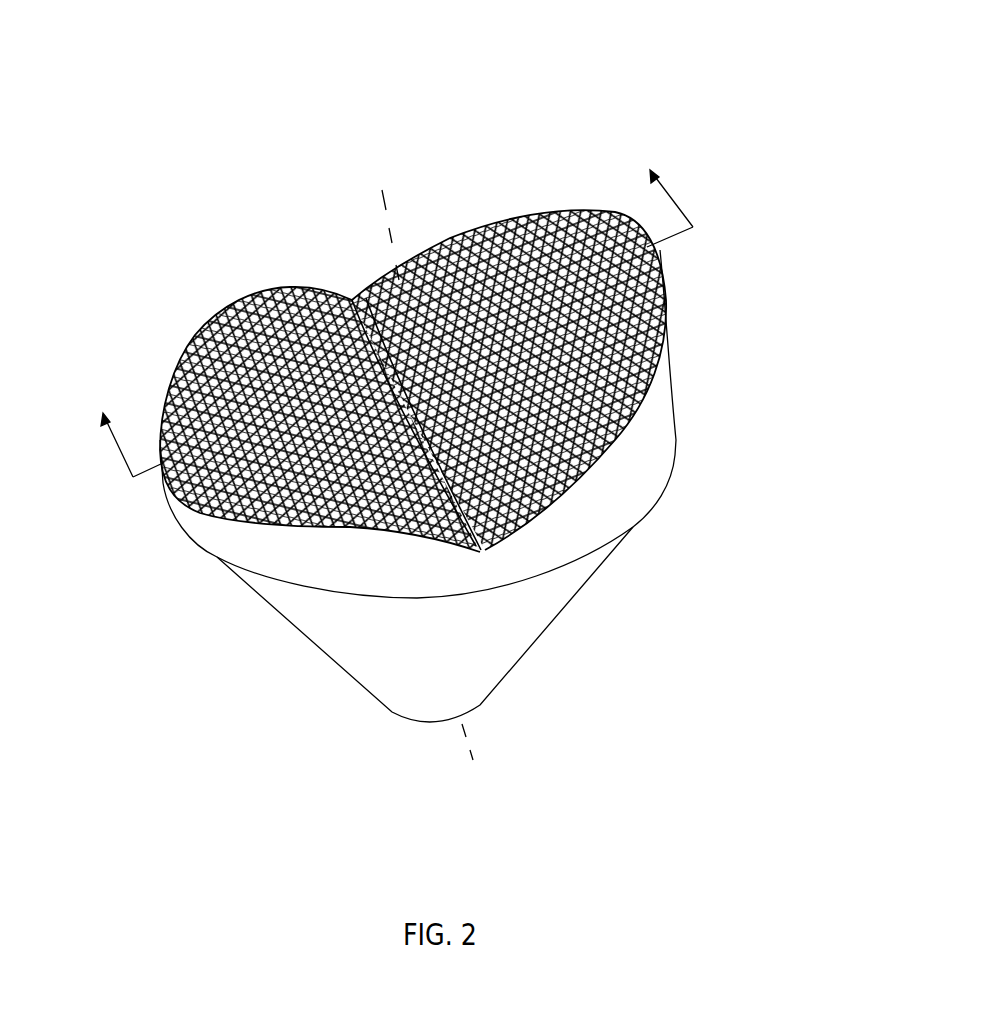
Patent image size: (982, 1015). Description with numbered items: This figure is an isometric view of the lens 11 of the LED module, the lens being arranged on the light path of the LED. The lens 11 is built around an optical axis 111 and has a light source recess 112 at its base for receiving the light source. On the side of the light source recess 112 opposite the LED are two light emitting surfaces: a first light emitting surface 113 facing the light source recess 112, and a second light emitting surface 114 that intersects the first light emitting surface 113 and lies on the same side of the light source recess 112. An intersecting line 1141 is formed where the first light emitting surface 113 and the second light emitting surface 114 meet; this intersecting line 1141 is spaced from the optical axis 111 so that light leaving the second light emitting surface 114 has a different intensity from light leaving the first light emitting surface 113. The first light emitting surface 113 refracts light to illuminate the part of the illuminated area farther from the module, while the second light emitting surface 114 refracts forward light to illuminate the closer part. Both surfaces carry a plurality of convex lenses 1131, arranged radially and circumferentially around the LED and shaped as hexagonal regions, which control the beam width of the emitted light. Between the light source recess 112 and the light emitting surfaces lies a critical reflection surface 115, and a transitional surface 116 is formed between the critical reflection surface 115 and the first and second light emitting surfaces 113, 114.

The lens 11 is at (474, 58).
The optical axis 111 is at (383, 217).
The light source recess 112 is at (438, 723).
The first light emitting surface 113 is at (370, 315).
The convex lenses 1131 is at (518, 265).
The second light emitting surface 114 is at (273, 407).
The intersecting line 1141 is at (550, 490).
The critical reflection surface 115 is at (567, 603).
The transitional surface 116 is at (650, 450).